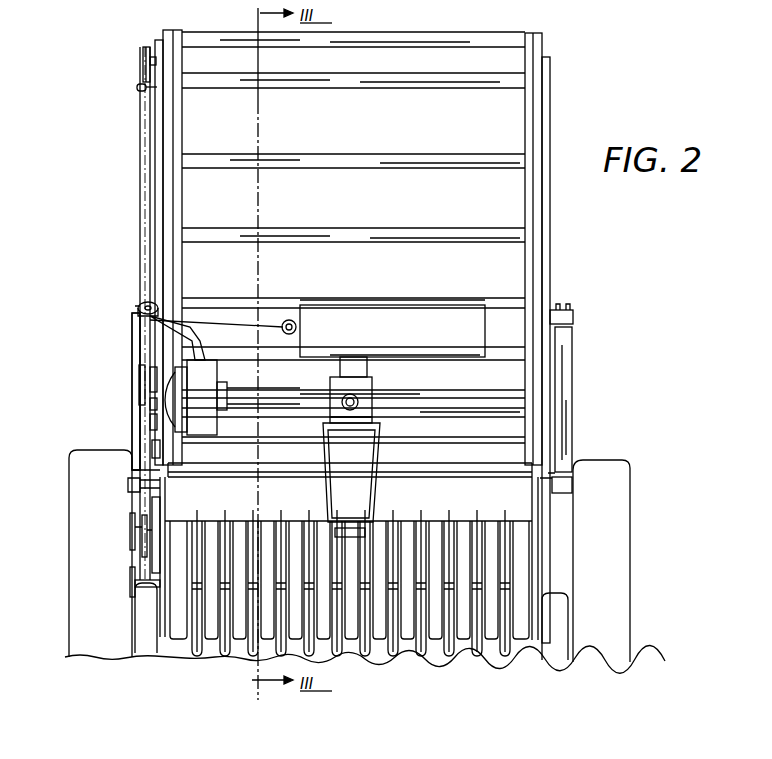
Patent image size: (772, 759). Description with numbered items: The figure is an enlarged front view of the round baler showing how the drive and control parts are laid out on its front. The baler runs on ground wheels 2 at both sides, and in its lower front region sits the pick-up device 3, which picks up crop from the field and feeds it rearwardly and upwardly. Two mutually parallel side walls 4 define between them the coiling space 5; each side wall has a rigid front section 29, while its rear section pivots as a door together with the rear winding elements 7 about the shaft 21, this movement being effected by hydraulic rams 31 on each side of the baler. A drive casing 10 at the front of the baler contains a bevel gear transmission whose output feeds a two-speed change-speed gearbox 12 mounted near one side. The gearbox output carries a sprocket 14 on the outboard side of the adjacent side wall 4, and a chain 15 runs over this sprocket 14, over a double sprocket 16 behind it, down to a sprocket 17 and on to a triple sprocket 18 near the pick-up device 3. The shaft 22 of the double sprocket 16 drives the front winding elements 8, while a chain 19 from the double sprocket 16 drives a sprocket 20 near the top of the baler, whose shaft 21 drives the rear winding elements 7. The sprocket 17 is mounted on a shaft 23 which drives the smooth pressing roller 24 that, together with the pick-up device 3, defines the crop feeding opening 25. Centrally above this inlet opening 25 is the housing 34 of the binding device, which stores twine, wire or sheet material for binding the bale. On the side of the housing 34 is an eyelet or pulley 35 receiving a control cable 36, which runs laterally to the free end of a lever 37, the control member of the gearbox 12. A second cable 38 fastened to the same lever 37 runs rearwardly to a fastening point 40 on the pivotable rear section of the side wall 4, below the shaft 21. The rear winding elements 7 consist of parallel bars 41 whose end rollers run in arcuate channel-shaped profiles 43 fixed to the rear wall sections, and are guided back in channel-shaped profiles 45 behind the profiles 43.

The ground wheels 2 is at (76, 490).
The pick-up device 3 is at (437, 640).
The side walls 4 is at (179, 140).
The coiling space 5 is at (350, 209).
The rear winding elements 7 is at (345, 102).
The front winding elements 8 is at (447, 387).
The drive casing 10 is at (360, 386).
The two-speed change-speed gearbox 12 is at (210, 386).
The sprocket 14 is at (152, 407).
The chain 15 is at (152, 424).
The double sprocket 16 is at (138, 372).
The sprocket 17 is at (162, 459).
The triple sprocket 18 is at (132, 522).
The chain 19 is at (145, 188).
The sprocket 20 is at (143, 52).
The shaft 21 is at (155, 62).
The shaft 22 is at (150, 386).
The shaft 23 is at (158, 231).
The pressing roller 24 is at (500, 452).
The crop feeding opening 25 is at (460, 490).
The front section 29 is at (142, 300).
The hydraulic rams 31 is at (136, 339).
The housing 34 is at (398, 320).
The eyelet or pulley 35 is at (300, 323).
The control cable 36 is at (287, 318).
The lever 37 is at (193, 325).
The cable 38 is at (140, 150).
The fastening point 40 is at (138, 88).
The bars 41 is at (415, 62).
The channel-shaped profile 43 is at (177, 191).
The channel-shaped profiles 45 is at (528, 420).